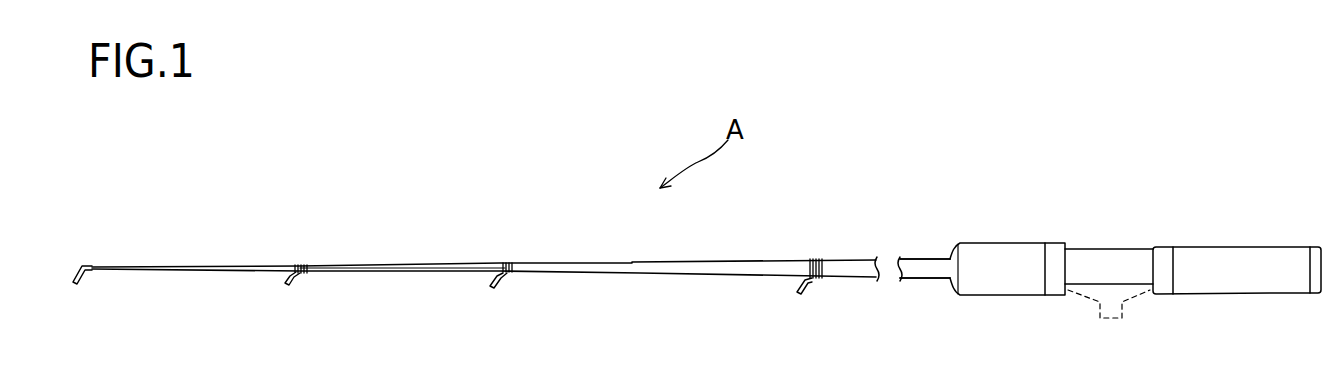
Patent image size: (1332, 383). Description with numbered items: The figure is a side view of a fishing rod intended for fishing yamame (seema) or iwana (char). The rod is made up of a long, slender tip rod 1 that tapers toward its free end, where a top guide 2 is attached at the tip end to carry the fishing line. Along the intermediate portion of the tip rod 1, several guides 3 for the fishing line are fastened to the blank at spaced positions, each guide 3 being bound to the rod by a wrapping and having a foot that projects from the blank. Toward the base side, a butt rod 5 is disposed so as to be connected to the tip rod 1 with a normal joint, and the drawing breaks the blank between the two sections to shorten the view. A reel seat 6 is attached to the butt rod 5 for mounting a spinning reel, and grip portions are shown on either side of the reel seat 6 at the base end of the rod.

The tip rod 1 is at (384, 264).
The top guide 2 is at (81, 265).
The guides 3 is at (289, 284).
The butt rod 5 is at (923, 268).
The reel seat 6 is at (1013, 255).